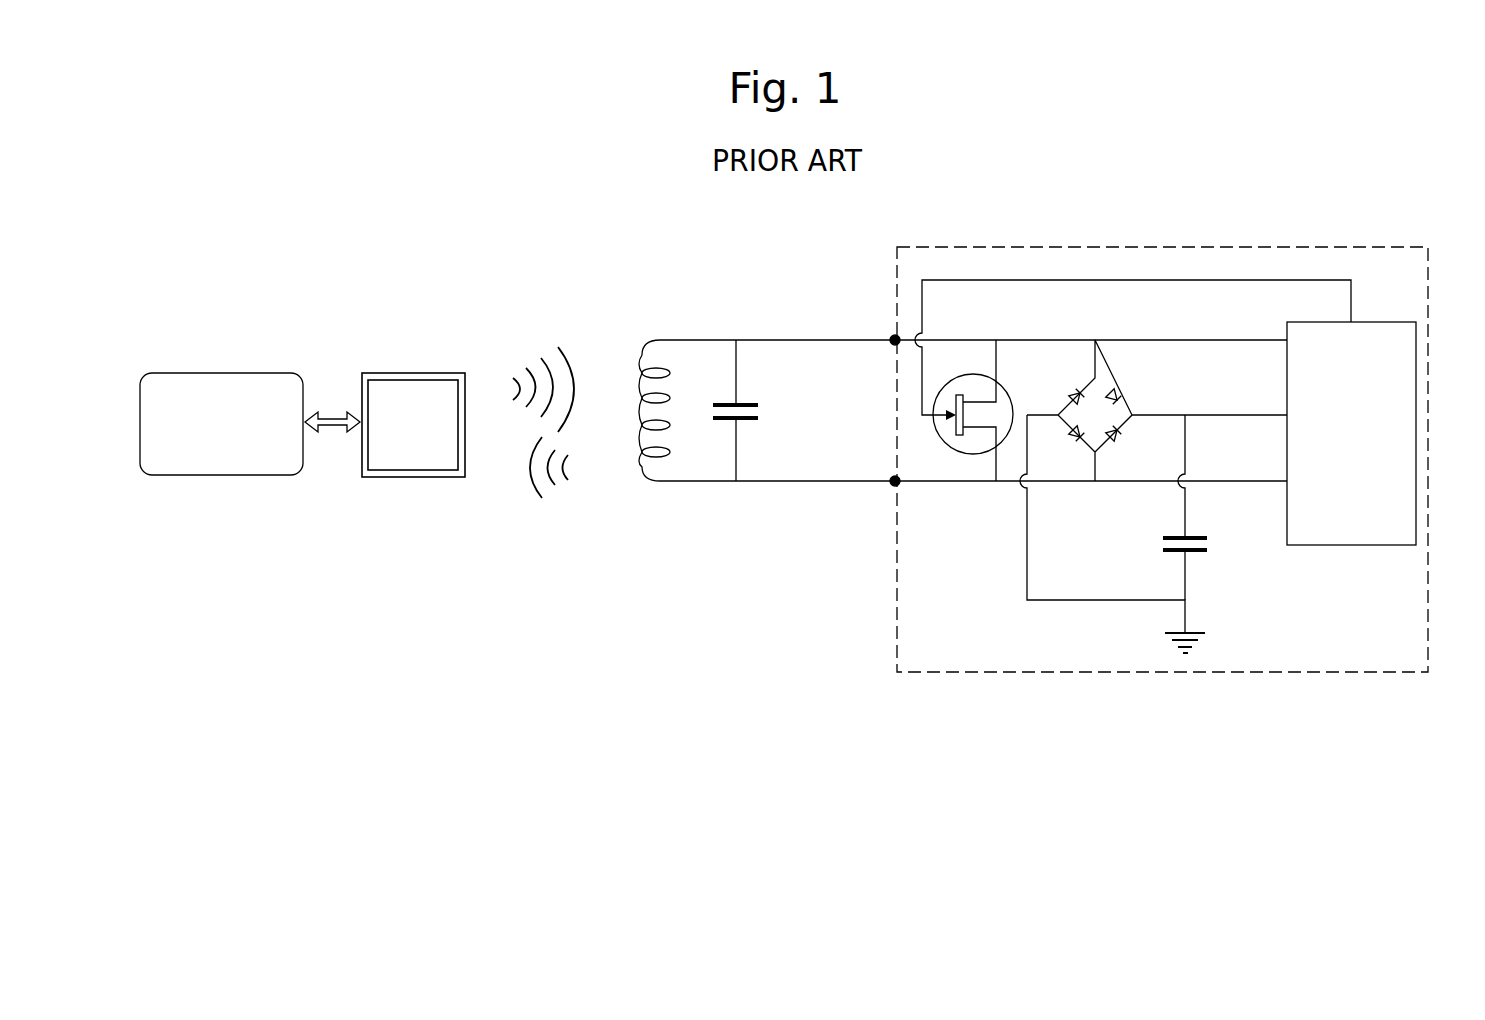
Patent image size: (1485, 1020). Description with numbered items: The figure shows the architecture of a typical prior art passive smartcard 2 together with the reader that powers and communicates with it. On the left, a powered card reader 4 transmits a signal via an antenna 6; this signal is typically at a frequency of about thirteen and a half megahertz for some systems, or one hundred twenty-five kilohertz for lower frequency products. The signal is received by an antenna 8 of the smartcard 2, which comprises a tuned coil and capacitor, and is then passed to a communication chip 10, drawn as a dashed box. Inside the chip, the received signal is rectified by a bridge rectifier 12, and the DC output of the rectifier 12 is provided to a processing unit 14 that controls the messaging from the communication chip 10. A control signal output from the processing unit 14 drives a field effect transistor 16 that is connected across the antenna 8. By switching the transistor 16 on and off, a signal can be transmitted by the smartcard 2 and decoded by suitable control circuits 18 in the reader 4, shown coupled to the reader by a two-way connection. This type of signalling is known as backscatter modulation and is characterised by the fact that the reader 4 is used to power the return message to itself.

The passive smartcard 2 is at (1203, 162).
The powered card reader 4 is at (248, 272).
The antenna 6 is at (422, 478).
The antenna 8 is at (642, 376).
The communication chip 10 is at (958, 247).
The bridge rectifier 12 is at (1086, 456).
The processing unit 14 is at (1395, 322).
The field effect transistor 16 is at (968, 454).
The control circuits 18 is at (225, 477).